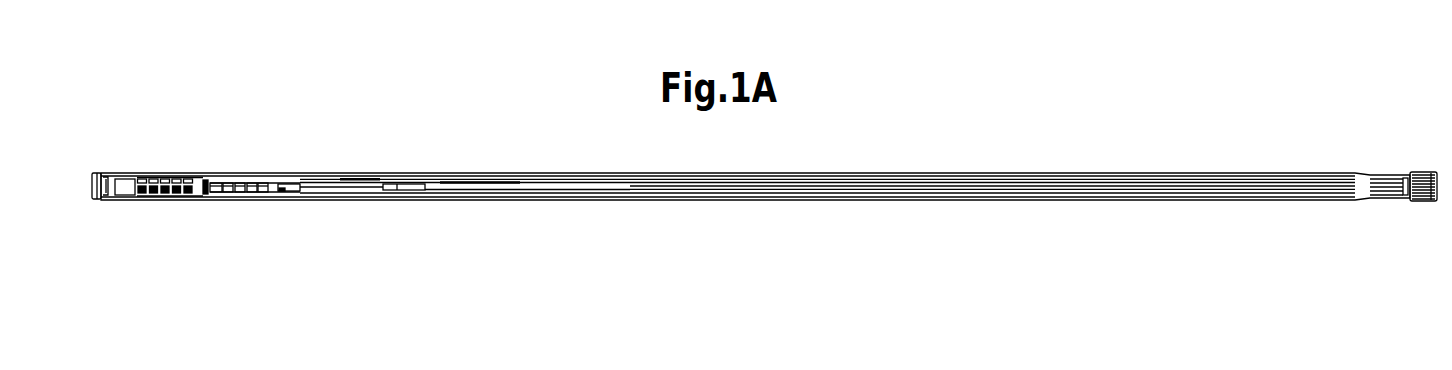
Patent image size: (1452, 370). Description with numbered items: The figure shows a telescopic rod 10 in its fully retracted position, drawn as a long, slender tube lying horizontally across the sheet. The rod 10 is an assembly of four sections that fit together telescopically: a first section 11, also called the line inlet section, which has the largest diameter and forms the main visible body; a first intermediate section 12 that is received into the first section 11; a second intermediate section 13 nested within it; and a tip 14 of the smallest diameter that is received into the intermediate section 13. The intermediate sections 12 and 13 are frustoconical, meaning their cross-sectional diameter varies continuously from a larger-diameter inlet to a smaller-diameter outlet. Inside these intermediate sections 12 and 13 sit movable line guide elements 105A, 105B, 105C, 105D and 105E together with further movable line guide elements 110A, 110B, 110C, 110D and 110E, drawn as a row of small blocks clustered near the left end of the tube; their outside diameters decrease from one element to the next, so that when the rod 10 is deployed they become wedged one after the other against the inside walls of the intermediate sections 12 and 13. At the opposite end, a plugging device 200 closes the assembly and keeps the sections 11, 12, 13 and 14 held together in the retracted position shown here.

The rod 10 is at (984, 127).
The first section 11 is at (1013, 200).
The intermediate section 12 is at (358, 172).
The intermediate section 13 is at (447, 180).
The tip 14 is at (383, 185).
The movable line guide element 105A is at (142, 178).
The movable line guide element 105B is at (153, 178).
The movable line guide element 105C is at (165, 195).
The movable line guide element 105D is at (177, 178).
The movable line guide element 105E is at (188, 178).
The movable line guide element 110A is at (222, 182).
The movable line guide element 110B is at (233, 195).
The movable line guide element 110C is at (242, 195).
The movable line guide element 110D is at (250, 195).
The movable line guide element 110E is at (262, 195).
The plugging device 200 is at (1422, 172).